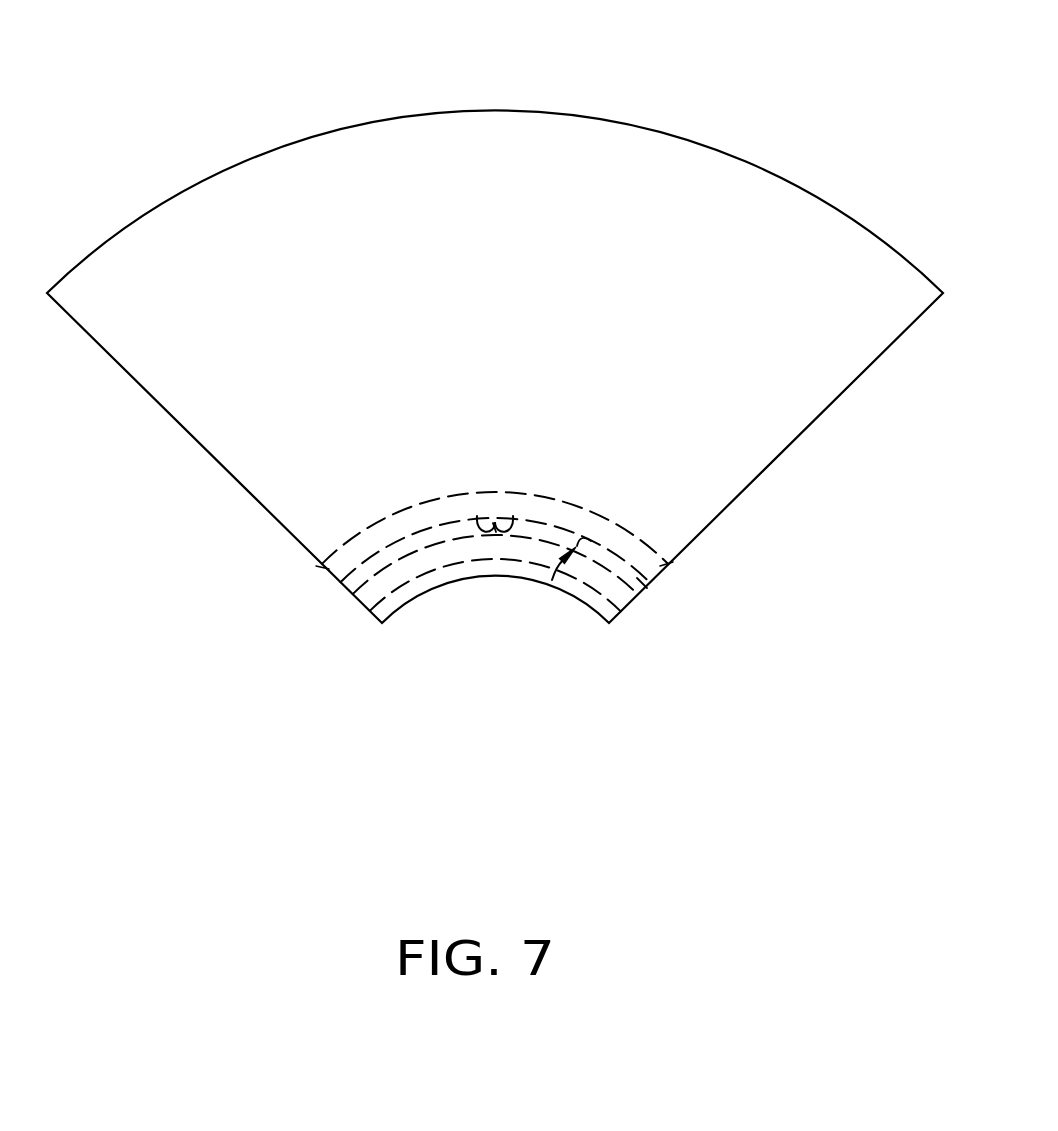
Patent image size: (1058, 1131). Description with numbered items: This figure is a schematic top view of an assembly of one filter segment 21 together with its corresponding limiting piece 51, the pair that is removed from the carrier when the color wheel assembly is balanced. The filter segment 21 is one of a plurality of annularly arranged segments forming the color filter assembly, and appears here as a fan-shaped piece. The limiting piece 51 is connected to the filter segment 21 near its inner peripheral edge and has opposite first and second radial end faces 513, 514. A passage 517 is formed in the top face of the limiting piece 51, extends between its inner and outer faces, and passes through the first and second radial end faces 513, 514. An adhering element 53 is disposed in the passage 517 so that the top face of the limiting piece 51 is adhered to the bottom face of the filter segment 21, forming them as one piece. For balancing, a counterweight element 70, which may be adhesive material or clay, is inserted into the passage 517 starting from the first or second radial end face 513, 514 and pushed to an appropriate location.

The filter segment 21 is at (353, 193).
The limiting piece 51 is at (377, 522).
The second radial end face 514 is at (323, 572).
The first radial end face 513 is at (653, 570).
The adhering element 53 is at (493, 534).
The counterweight element 70 is at (552, 580).
The passage 517 is at (645, 590).